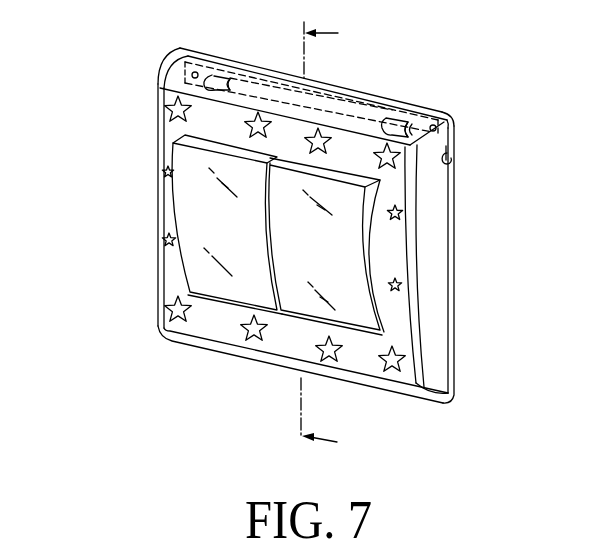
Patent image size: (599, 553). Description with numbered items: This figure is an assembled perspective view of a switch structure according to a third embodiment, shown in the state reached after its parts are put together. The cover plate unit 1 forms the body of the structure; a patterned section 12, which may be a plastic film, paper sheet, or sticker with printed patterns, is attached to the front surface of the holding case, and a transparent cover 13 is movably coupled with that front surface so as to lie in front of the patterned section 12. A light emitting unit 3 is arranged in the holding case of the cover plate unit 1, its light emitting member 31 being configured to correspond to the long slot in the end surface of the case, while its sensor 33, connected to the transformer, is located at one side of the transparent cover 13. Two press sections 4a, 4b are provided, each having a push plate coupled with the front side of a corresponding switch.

The cover plate unit 1 is at (132, 163).
The patterned section 12 is at (163, 87).
The transparent cover 13 is at (157, 103).
The light emitting unit 3 is at (398, 97).
The light emitting member 31 is at (234, 86).
The sensor 33 is at (452, 151).
The press section 4a is at (176, 220).
The press section 4b is at (302, 297).